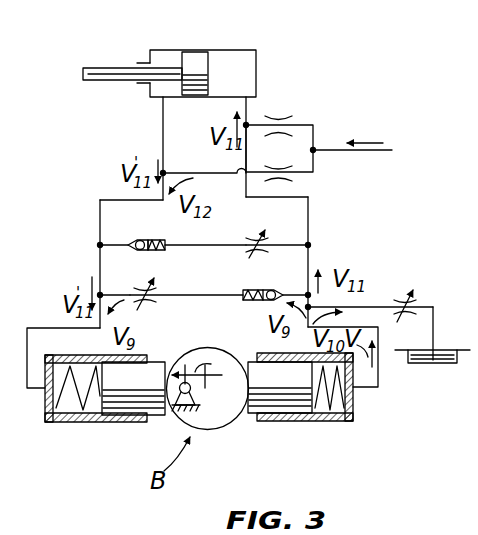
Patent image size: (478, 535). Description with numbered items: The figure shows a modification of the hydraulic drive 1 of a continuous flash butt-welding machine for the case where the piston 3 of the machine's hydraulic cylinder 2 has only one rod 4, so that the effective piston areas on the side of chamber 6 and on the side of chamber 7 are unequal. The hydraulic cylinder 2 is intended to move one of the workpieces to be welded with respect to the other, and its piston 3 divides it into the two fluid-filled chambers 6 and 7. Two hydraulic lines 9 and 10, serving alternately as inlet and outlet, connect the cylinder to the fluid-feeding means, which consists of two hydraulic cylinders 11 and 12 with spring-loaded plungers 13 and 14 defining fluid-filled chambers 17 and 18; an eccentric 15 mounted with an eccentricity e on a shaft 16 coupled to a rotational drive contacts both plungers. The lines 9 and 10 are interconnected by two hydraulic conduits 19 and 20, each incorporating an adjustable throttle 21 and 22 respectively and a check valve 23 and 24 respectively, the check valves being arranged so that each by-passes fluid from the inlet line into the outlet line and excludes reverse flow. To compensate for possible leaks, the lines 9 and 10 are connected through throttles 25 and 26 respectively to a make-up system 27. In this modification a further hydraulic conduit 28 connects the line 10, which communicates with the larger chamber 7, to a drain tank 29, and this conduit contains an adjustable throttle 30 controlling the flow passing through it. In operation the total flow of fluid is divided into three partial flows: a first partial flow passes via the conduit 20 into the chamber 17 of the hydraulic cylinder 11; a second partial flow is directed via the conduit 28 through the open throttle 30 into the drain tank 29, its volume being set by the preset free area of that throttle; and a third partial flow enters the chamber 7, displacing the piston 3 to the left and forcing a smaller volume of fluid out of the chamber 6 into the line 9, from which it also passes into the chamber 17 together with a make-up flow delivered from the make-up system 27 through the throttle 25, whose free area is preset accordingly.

The hydraulic drive 1 is at (110, 193).
The hydraulic cylinder 2 is at (212, 36).
The piston 3 is at (193, 60).
The rod 4 is at (104, 68).
The chamber 6 is at (160, 50).
The chamber 7 is at (246, 56).
The hydraulic line 9 is at (100, 218).
The hydraulic line 10 is at (309, 226).
The hydraulic cylinder 11 is at (92, 422).
The hydraulic cylinder 12 is at (305, 420).
The spring-loaded plunger 13 is at (130, 420).
The spring-loaded plunger 14 is at (284, 420).
The eccentric 15 is at (221, 420).
The shaft 16 is at (191, 390).
The chamber 17 is at (62, 422).
The chamber 18 is at (340, 421).
The hydraulic conduit 19 is at (219, 240).
The hydraulic conduit 20 is at (217, 303).
The adjustable throttle 21 is at (248, 252).
The adjustable throttle 22 is at (141, 306).
The check valve 23 is at (160, 240).
The check valve 24 is at (266, 290).
The throttle 25 is at (278, 167).
The throttle 26 is at (283, 119).
The make-up system 27 is at (388, 154).
The hydraulic conduit 28 is at (367, 302).
The drain tank 29 is at (423, 365).
The adjustable throttle 30 is at (400, 315).